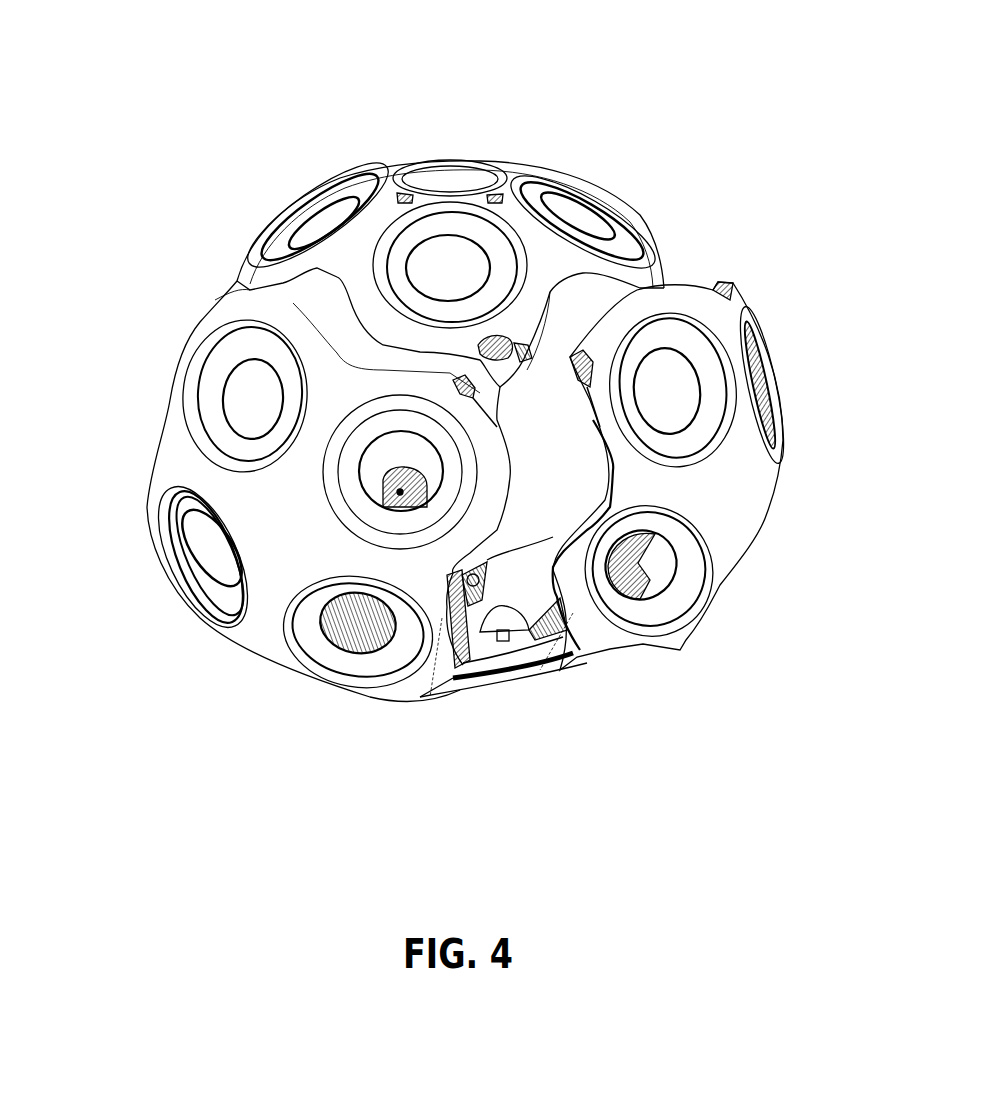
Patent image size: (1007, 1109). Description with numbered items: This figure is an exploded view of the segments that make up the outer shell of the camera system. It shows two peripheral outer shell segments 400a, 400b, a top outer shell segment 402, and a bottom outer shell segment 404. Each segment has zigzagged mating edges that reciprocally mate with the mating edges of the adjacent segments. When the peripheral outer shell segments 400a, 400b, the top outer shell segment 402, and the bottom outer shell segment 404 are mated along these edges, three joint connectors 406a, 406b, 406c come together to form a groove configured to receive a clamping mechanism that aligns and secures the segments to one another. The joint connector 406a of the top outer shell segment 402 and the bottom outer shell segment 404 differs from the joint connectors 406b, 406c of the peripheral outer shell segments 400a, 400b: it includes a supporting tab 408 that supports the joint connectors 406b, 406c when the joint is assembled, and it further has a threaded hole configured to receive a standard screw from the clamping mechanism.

The top outer shell segment 402 is at (516, 164).
The bottom outer shell segment 404 is at (513, 663).
The peripheral outer shell segment 400a is at (265, 618).
The peripheral outer shell segment 400b is at (723, 528).
The joint connector 406a is at (492, 347).
The joint connector 406b is at (593, 357).
The joint connector 406c is at (455, 380).
The supporting tab 408 is at (522, 352).